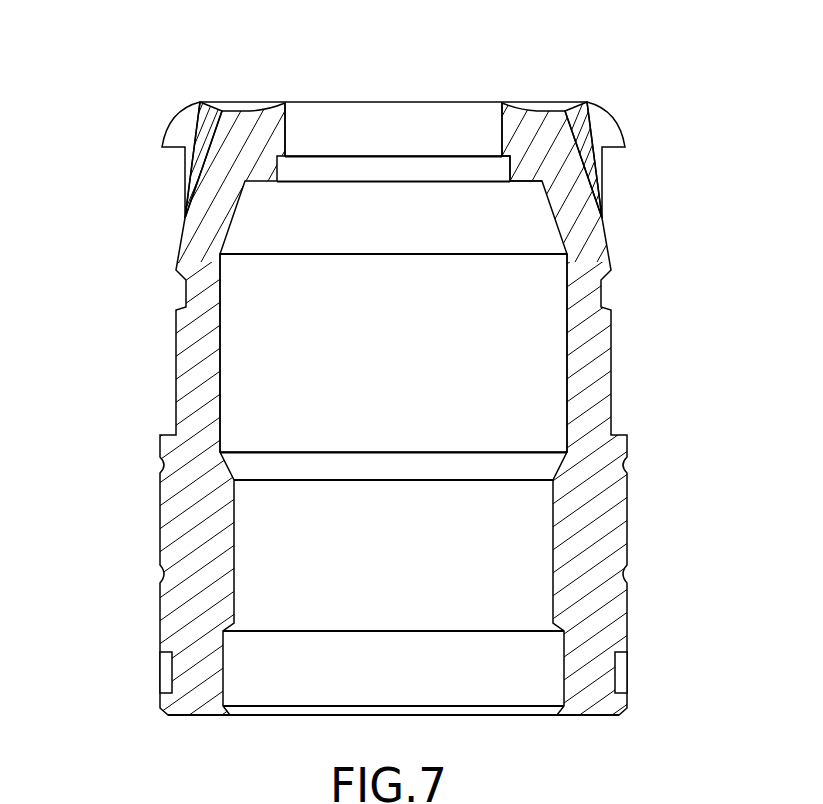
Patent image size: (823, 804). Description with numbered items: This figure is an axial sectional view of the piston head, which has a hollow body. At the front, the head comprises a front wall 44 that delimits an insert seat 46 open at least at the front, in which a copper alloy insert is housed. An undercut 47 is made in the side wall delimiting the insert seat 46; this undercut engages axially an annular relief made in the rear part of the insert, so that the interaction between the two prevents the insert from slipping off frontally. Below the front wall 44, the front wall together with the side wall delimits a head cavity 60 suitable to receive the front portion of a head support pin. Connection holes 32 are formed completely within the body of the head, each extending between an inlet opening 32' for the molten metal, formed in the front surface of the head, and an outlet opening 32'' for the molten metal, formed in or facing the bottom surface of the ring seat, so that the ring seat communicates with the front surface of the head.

The front wall 44 is at (253, 149).
The insert seat 46 is at (393, 126).
The connection holes 32 is at (428, 172).
The inlet opening 32' is at (402, 123).
The outlet opening 32'' is at (656, 188).
The undercut 47 is at (503, 157).
The head cavity 60 is at (412, 361).